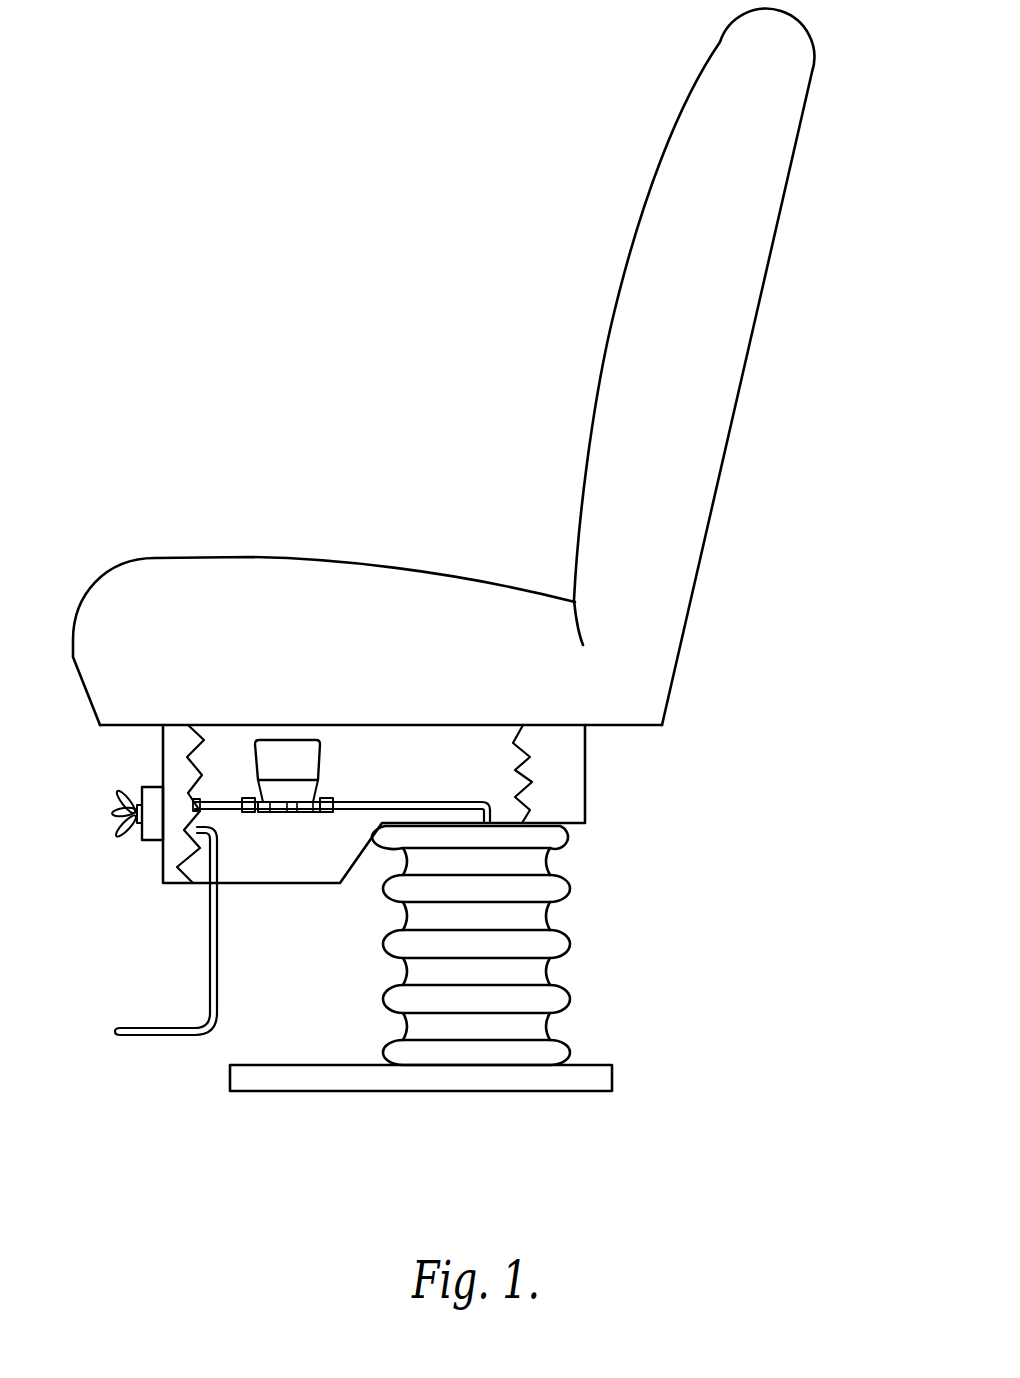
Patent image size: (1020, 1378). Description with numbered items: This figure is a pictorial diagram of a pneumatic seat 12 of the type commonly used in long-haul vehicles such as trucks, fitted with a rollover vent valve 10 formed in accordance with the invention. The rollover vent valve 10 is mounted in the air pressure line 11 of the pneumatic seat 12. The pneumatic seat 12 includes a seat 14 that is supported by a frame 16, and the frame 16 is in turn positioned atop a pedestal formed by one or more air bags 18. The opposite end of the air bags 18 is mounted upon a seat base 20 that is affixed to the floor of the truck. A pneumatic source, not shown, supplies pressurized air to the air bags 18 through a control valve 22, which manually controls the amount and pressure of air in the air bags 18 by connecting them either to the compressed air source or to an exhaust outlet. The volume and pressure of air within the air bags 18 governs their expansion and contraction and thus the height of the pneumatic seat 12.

The rollover vent valve 10 is at (284, 788).
The air pressure line 11 is at (410, 800).
The pneumatic seat 12 is at (330, 413).
The seat 14 is at (663, 448).
The frame 16 is at (550, 802).
The air bag 18 is at (572, 945).
The seat base 20 is at (613, 1082).
The control valve 22 is at (153, 841).